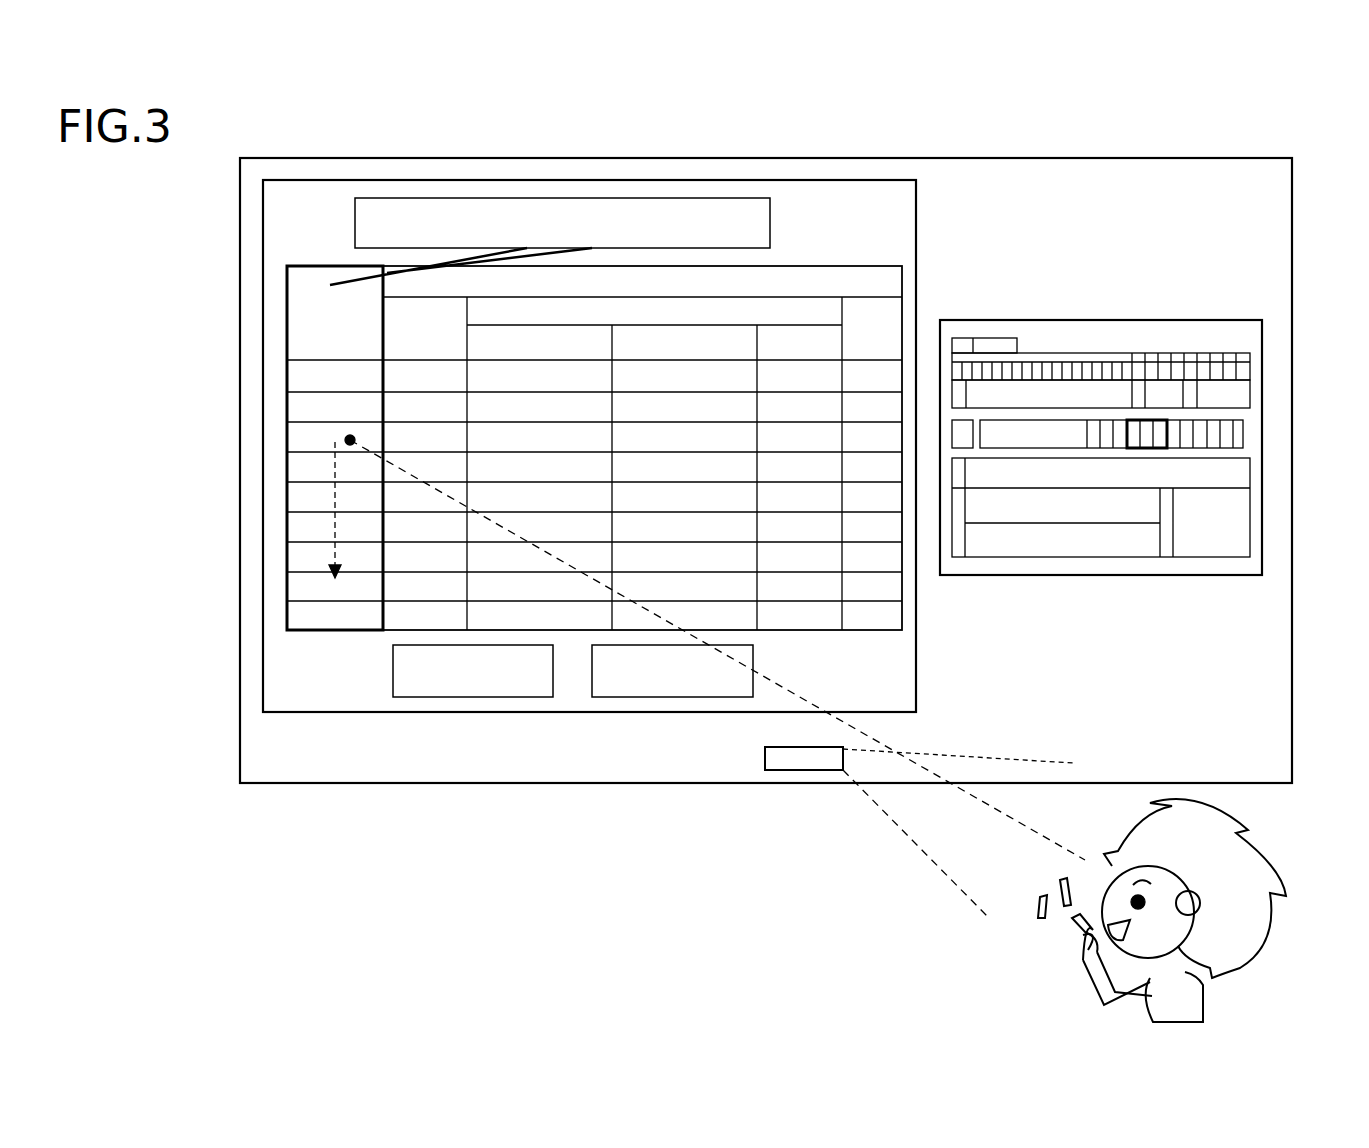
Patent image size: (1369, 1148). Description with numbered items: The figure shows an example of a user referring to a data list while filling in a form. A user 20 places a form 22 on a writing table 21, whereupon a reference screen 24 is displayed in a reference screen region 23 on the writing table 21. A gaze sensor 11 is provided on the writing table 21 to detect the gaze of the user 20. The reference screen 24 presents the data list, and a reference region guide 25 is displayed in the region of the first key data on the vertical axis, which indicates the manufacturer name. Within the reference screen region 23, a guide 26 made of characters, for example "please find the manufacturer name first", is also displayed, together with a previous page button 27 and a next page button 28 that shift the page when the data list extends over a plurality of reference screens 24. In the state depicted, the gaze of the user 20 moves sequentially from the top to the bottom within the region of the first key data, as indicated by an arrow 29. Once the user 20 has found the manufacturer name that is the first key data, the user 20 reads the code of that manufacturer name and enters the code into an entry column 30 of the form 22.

The gaze sensor 11 is at (800, 770).
The user 20 is at (1285, 866).
The writing table 21 is at (1003, 158).
The form 22 is at (1070, 320).
The reference screen region 23 is at (270, 180).
The reference screen 24 is at (330, 266).
The reference region guide 25 is at (287, 407).
The guide 26 is at (385, 198).
The previous page button 27 is at (473, 697).
The next page button 28 is at (680, 697).
The arrow 29 is at (330, 495).
The entry column 30 is at (1157, 420).